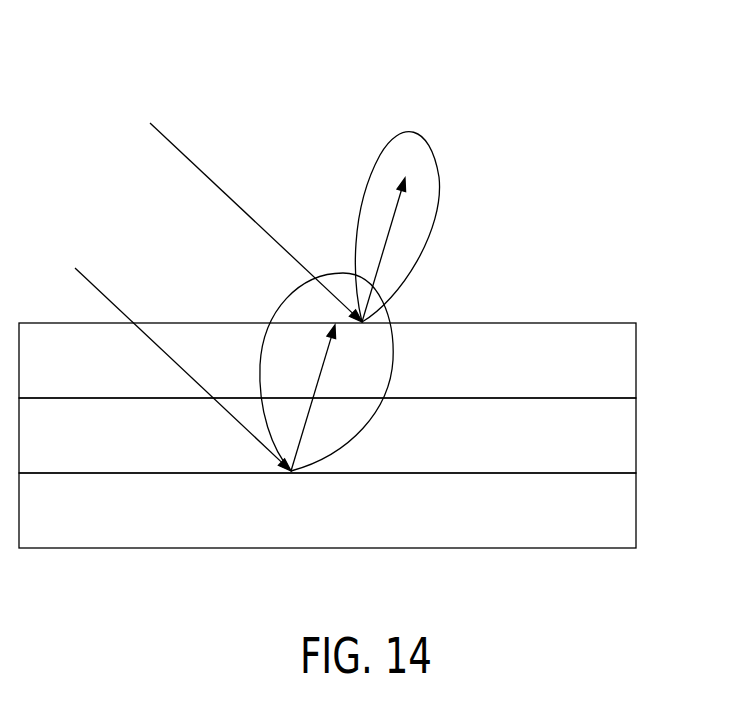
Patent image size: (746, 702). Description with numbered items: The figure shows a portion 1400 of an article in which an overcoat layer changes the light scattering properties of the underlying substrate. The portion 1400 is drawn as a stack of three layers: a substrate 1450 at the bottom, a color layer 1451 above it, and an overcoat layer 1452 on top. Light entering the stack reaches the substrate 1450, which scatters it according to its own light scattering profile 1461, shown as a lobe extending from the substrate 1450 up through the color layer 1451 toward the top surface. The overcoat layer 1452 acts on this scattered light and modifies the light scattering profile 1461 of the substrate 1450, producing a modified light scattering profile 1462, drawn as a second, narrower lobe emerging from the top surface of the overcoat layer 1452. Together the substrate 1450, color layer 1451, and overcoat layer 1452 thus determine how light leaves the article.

The portion of an article 1400 is at (590, 88).
The substrate 1450 is at (629, 520).
The color layer 1451 is at (629, 440).
The overcoat layer 1452 is at (629, 343).
The light scattering profile 1461 is at (288, 303).
The modified light scattering profile 1462 is at (382, 187).